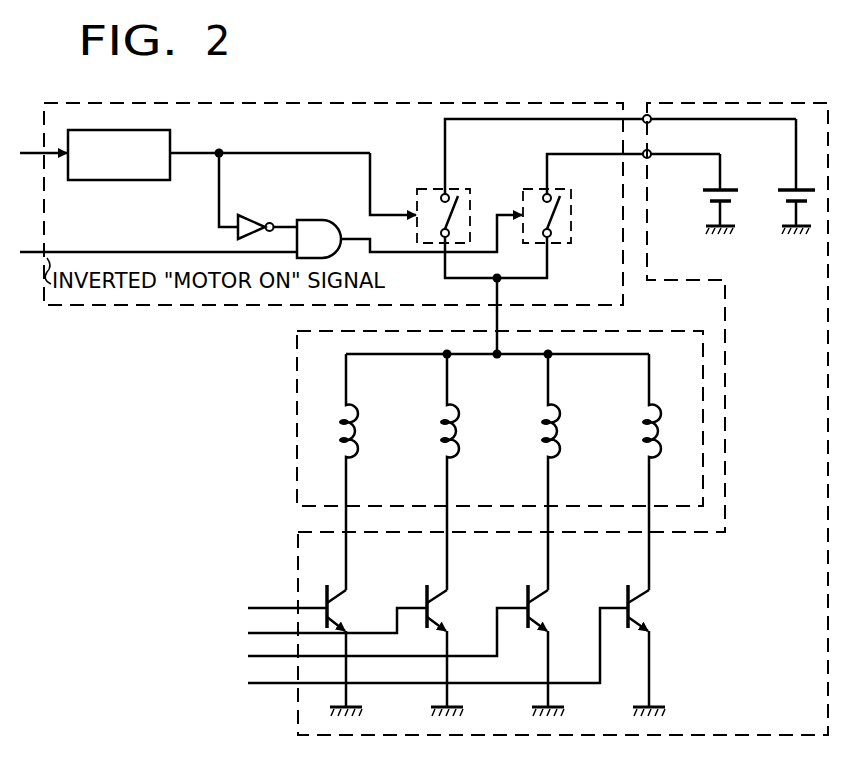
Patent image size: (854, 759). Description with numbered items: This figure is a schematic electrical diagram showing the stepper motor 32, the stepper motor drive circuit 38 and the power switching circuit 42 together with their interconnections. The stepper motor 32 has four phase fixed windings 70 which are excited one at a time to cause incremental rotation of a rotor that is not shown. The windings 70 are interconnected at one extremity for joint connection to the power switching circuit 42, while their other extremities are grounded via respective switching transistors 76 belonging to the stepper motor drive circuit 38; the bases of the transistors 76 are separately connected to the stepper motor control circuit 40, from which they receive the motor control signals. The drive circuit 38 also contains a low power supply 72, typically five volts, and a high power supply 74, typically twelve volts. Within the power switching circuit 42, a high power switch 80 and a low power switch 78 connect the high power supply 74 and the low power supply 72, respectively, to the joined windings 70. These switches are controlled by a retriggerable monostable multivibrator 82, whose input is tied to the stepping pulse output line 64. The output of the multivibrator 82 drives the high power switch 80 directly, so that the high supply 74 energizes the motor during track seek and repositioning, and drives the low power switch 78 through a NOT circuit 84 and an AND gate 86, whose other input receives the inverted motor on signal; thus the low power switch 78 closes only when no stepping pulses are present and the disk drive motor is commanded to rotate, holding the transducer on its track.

The power switching circuit 42 is at (398, 103).
The stepping pulse output line 64 is at (30, 158).
The retriggerable monostable multivibrator (RMMV) 82 is at (172, 140).
The NOT circuit 84 is at (252, 215).
The AND gate 86 is at (312, 219).
The high power switch 80 is at (463, 205).
The low power switch 78 is at (575, 207).
The low power supply 72 is at (712, 208).
The high power supply 74 is at (794, 204).
The stepper motor 32 is at (295, 382).
The phase fixed windings 70 is at (360, 426).
The stepper motor drive circuit 38 is at (295, 540).
The switching transistors 76 is at (347, 593).
The stepper motor control circuit 40 is at (248, 632).